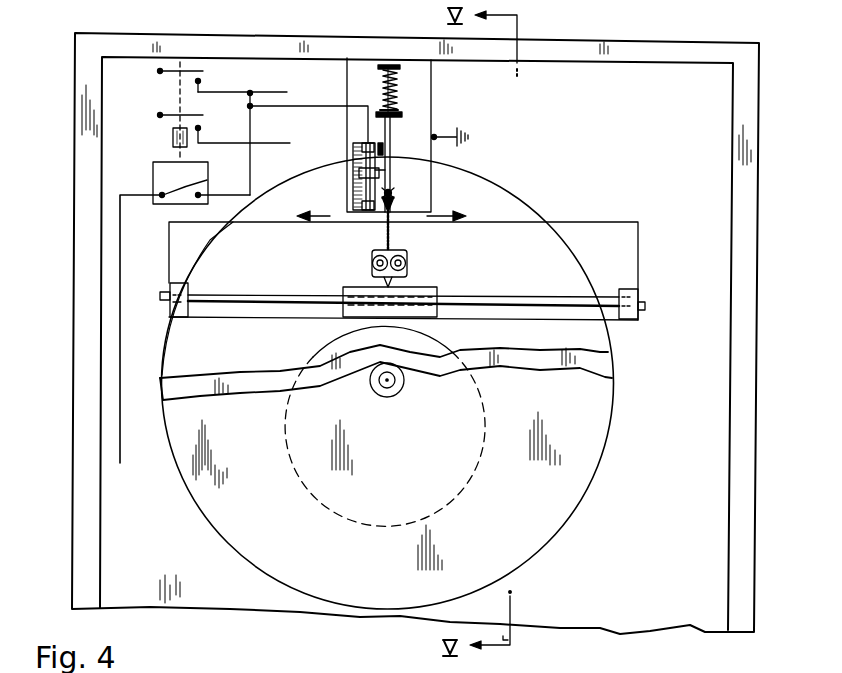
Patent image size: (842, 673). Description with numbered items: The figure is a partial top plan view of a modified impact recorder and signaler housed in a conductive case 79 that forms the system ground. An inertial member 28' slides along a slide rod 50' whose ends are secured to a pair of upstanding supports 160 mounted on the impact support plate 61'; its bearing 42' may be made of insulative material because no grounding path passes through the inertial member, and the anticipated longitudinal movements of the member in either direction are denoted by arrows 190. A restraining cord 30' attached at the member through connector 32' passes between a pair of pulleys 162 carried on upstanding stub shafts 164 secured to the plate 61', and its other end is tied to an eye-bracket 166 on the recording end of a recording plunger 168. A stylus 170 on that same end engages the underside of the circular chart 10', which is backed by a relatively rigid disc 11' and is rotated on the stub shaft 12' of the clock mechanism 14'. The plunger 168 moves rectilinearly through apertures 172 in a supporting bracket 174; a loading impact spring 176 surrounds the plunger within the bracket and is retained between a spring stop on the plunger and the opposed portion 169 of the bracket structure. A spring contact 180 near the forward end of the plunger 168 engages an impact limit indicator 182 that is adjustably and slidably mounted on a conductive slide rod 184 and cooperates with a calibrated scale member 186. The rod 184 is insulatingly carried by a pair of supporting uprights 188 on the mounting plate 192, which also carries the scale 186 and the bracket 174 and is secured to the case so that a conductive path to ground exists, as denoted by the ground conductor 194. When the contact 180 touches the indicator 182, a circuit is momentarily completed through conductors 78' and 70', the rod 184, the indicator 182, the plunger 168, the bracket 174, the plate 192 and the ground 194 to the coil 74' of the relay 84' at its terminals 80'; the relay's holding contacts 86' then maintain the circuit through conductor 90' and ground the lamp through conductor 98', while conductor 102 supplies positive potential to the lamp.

The conductive support 79 is at (760, 158).
The relay 84' is at (158, 111).
The relay contacts 86' is at (220, 79).
The conductor 98' is at (242, 81).
The conductor 70' is at (308, 112).
The conductor 102 is at (257, 143).
The conductor 90' is at (267, 144).
The relay coil 74' is at (187, 173).
The relay coil terminals 80' is at (201, 180).
The conductor 78' is at (141, 329).
The stylus 170 is at (360, 216).
The slide rod 184 is at (366, 150).
The supporting uprights 188 is at (362, 143).
The impact limit indicator 182 is at (360, 165).
The scale member 186 is at (385, 170).
The spring contact 180 is at (380, 148).
The loading impact spring 176 is at (396, 88).
The apertures 172 is at (392, 64).
The supporting bracket 174 is at (401, 117).
The opposed portion of bracket structure 169 is at (400, 112).
The recording plunger 168 is at (395, 128).
The eye-bracket 166 is at (395, 193).
The mounting plate 192 is at (458, 129).
The ground conductor 194 is at (447, 140).
The arrows 190 is at (298, 238).
The impact support plate 61' is at (403, 260).
The slide rod 50' is at (403, 292).
The supports 160 is at (169, 306).
The inertial member 28' is at (407, 298).
The carriage connector 32' is at (417, 275).
The stub shafts 164 is at (408, 266).
The pulleys 162 is at (373, 258).
The restraining cord 30' is at (407, 231).
The inertial member bearing 42' is at (320, 269).
The circular chart 10' is at (409, 383).
The rigid disc 11' is at (409, 374).
The clock mechanism 14' is at (385, 434).
The stub shaft 12' is at (400, 390).